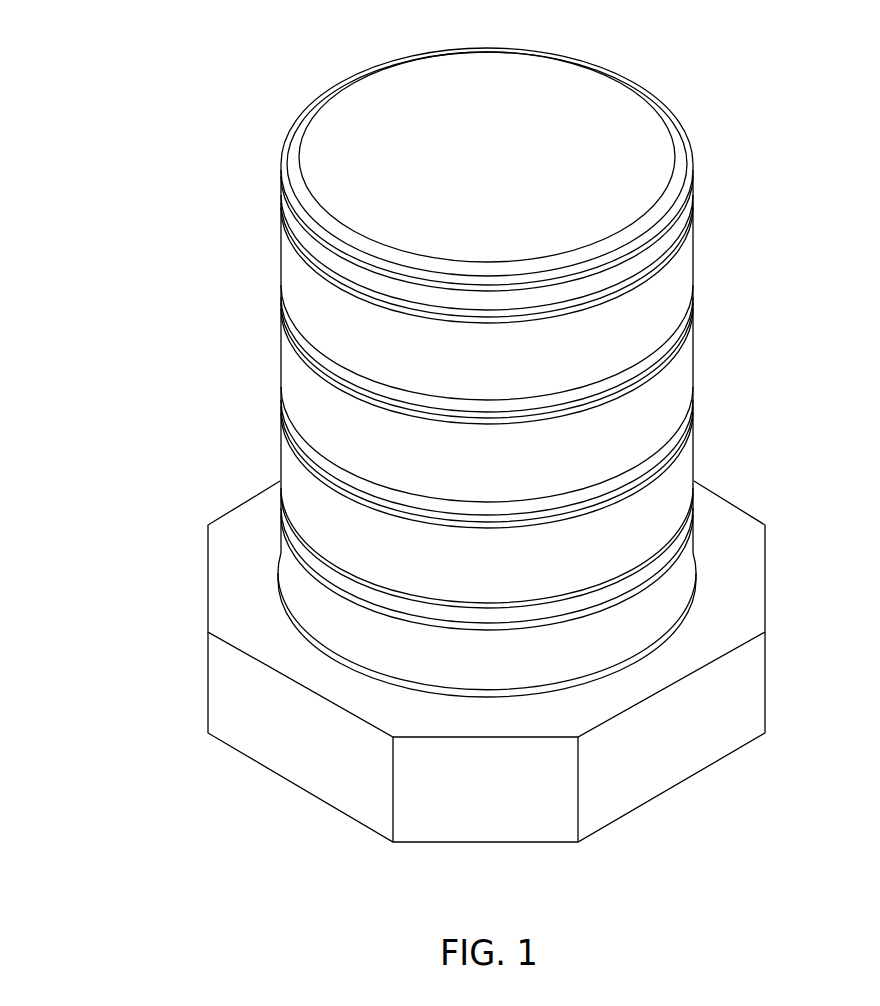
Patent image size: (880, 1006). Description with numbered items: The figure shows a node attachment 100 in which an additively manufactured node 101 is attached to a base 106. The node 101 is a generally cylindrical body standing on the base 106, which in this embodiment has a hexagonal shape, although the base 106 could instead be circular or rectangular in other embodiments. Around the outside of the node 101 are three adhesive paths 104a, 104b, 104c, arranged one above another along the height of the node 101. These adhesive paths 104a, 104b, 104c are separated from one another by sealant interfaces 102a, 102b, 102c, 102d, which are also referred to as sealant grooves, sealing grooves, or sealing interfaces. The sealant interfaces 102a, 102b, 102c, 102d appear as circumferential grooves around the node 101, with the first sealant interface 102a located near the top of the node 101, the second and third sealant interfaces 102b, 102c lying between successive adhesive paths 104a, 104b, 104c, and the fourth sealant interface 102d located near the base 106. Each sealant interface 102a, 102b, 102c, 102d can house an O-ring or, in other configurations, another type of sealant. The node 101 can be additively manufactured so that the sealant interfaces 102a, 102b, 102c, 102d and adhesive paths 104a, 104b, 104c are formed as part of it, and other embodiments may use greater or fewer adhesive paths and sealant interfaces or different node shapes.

The node attachment 100 is at (157, 65).
The node 101 is at (448, 170).
The sealant interface 102a is at (282, 213).
The sealant interface 102b is at (282, 318).
The sealant interface 102c is at (282, 418).
The sealant interface 102d is at (283, 513).
The adhesive path 104a is at (465, 372).
The adhesive path 104b is at (472, 476).
The adhesive path 104c is at (471, 572).
The base 106 is at (657, 738).